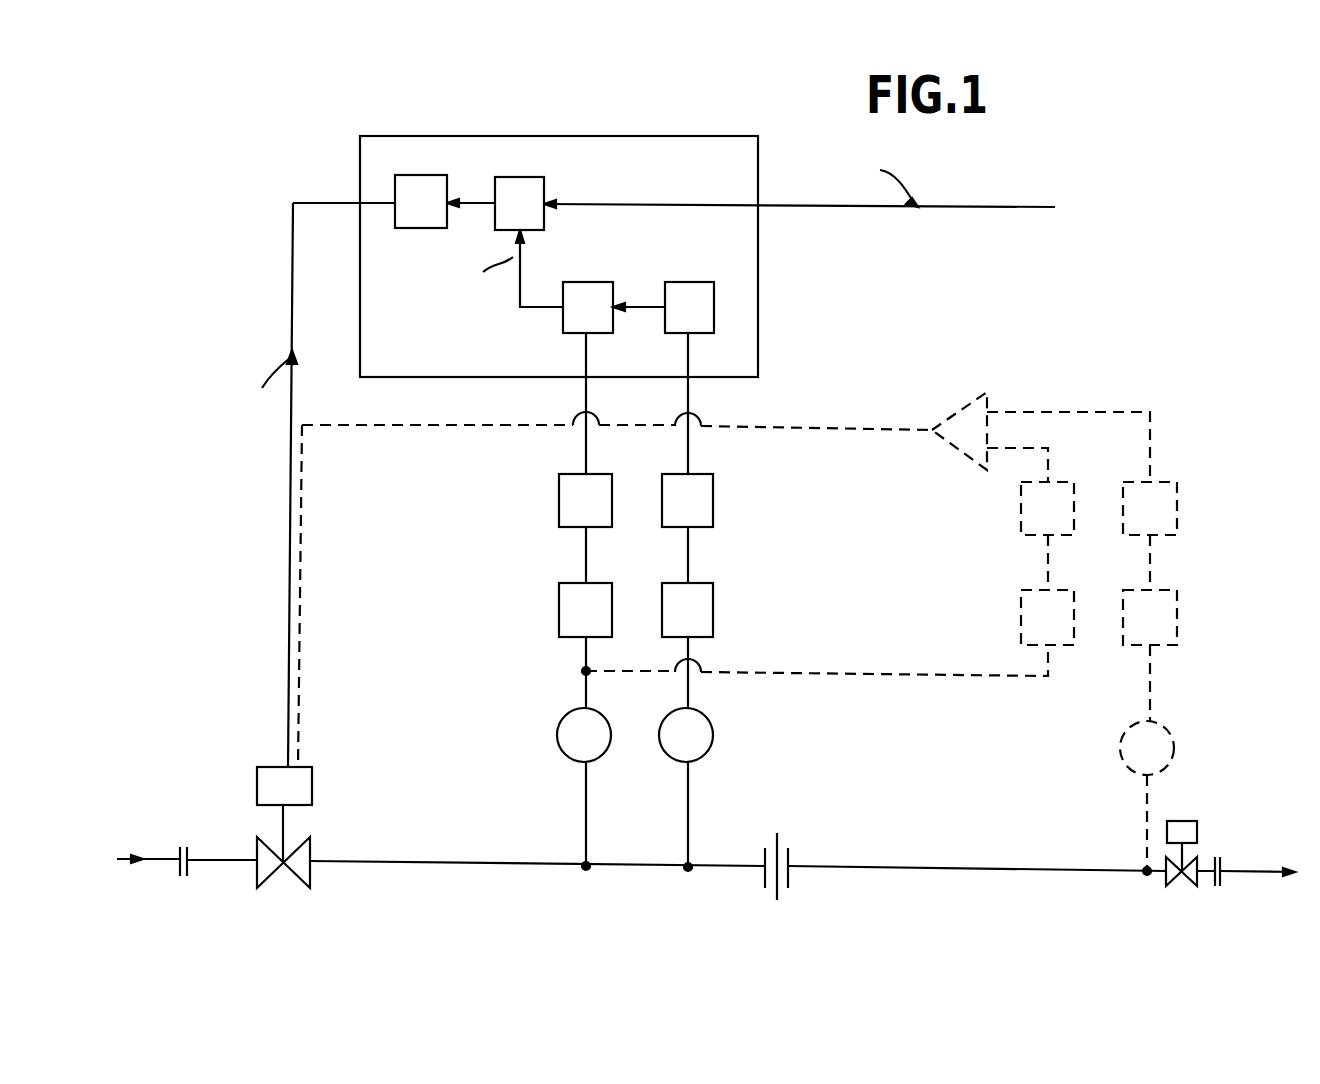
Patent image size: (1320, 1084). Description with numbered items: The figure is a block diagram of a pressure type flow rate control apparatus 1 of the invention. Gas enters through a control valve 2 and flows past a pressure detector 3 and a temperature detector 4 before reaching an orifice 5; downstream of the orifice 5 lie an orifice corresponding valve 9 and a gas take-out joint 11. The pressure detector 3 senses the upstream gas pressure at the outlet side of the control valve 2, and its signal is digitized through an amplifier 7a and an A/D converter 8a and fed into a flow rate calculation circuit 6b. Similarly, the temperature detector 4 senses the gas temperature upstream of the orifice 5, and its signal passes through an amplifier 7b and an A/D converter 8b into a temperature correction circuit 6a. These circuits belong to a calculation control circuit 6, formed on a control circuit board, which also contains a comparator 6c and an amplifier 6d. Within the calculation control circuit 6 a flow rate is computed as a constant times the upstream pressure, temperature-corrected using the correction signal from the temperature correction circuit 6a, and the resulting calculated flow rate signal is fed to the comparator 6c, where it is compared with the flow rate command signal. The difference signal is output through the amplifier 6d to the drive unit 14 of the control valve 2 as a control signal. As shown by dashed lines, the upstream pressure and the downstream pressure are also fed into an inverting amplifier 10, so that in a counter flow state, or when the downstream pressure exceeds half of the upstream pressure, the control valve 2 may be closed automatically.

The pressure type flow rate control apparatus 1 is at (258, 155).
The control valve 2 is at (312, 880).
The pressure detector 3 is at (560, 713).
The temperature detector 4 is at (700, 738).
The orifice 5 is at (780, 898).
The calculation control circuit 6 is at (605, 137).
The temperature correction circuit 6a is at (694, 295).
The flow rate calculation circuit 6b is at (591, 295).
The comparator 6c is at (527, 188).
The amplifier 6d is at (427, 190).
The amplifier 7a is at (565, 608).
The amplifier 7b is at (690, 607).
The A/D converter 8a is at (559, 505).
The A/D converter 8b is at (713, 513).
The orifice corresponding valve 9 is at (1166, 880).
The inverting amplifier 10 is at (973, 407).
The gas take-out joint 11 is at (1220, 866).
The drive unit 14 is at (302, 800).